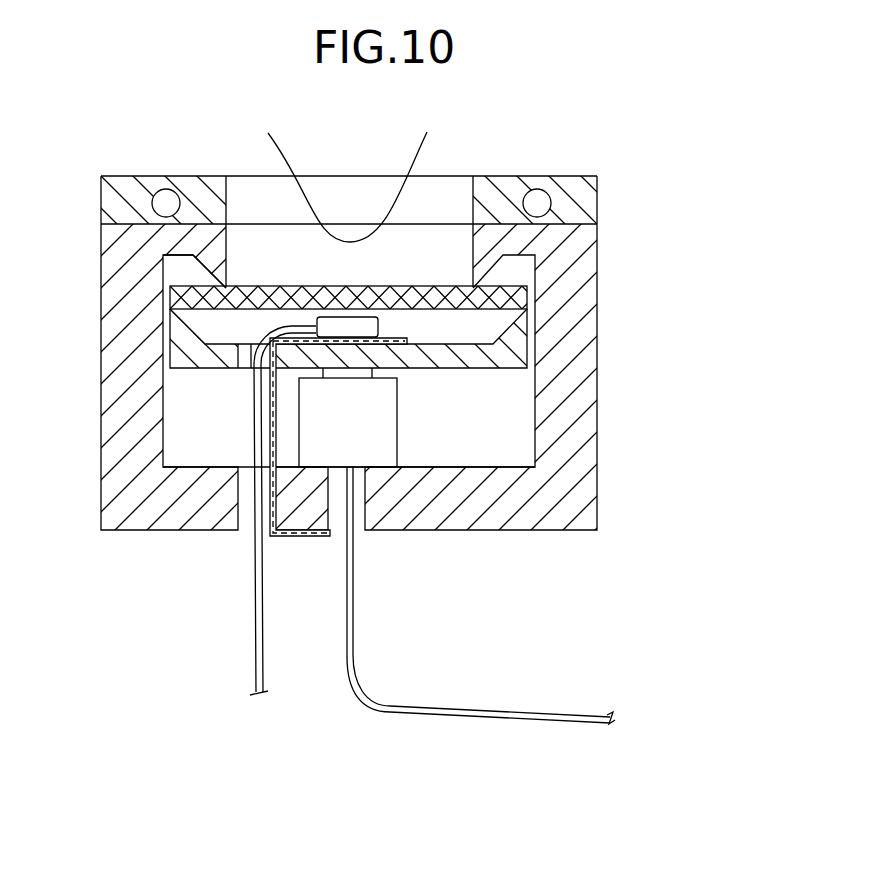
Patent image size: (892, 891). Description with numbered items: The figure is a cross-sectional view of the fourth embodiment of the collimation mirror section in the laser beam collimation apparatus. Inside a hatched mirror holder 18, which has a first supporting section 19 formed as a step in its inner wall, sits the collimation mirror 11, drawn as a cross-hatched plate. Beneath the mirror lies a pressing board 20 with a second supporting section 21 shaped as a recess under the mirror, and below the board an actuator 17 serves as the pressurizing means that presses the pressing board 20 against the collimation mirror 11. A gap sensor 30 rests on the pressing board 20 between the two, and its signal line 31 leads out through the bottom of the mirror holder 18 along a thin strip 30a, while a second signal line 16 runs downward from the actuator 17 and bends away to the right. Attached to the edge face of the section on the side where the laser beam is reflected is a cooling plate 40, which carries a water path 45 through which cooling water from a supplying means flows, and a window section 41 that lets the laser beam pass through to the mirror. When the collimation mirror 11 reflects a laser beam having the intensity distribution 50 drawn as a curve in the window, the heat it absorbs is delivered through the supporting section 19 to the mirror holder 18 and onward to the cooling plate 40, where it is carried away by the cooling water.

The collimation mirror 11 is at (190, 298).
The signal line 16 is at (505, 712).
The actuator 17 is at (388, 432).
The mirror holder 18 is at (568, 248).
The first supporting section 19 is at (222, 267).
The pressing board 20 is at (518, 348).
The second supporting section 21 is at (175, 323).
The gap sensor 30 is at (378, 330).
The bracket 30a is at (292, 537).
The signal line 31 is at (256, 628).
The cooling plate 40 is at (598, 181).
The window section 41 is at (473, 186).
The water path 45 is at (541, 192).
The intensity distribution 50 is at (287, 143).